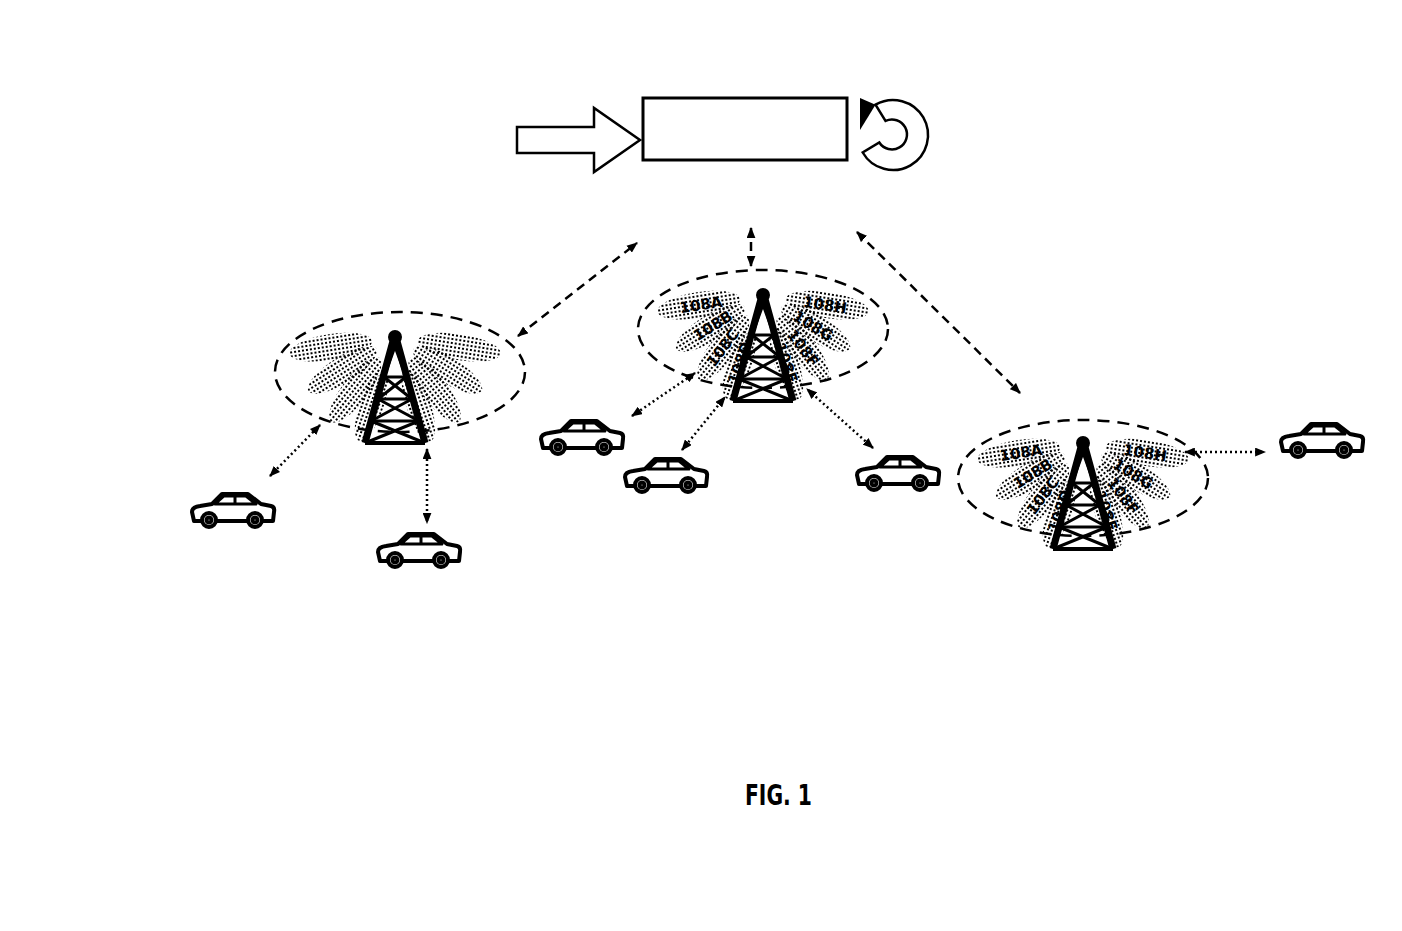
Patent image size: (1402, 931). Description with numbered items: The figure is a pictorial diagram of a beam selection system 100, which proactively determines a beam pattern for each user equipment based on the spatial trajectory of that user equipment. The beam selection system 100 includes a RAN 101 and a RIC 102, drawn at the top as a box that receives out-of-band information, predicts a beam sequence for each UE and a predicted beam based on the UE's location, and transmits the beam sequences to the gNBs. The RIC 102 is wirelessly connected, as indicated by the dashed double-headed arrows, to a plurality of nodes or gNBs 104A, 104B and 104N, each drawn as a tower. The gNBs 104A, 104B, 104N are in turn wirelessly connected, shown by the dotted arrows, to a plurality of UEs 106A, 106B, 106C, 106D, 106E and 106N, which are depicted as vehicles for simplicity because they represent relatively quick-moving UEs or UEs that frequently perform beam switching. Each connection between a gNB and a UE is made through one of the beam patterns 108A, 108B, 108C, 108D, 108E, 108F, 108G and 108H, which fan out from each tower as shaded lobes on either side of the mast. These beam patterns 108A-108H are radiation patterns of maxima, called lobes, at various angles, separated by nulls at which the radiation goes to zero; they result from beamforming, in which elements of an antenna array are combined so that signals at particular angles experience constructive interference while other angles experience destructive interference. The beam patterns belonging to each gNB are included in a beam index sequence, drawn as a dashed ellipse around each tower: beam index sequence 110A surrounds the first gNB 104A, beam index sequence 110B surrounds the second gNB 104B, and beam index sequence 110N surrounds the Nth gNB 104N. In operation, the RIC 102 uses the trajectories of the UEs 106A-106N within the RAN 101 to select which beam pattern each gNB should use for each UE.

The beam selection system 100 is at (134, 158).
The RAN 101 is at (157, 301).
The RIC 102 is at (745, 129).
The gNB 104A is at (411, 412).
The gNB 104B is at (786, 426).
The gNB 104N is at (1120, 566).
The UE 106A is at (190, 532).
The UE 106B is at (427, 571).
The UE 106C is at (591, 406).
The UE 106D is at (668, 500).
The UE 106E is at (895, 494).
The UE 106N is at (1313, 470).
The beam pattern 108A is at (330, 347).
The beam pattern 108B is at (343, 370).
The beam pattern 108C is at (355, 390).
The beam pattern 108D is at (371, 405).
The beam pattern 108E is at (418, 405).
The beam pattern 108F is at (434, 390).
The beam pattern 108G is at (448, 370).
The beam pattern 108H is at (459, 347).
The beam index sequence 110A is at (284, 348).
The beam index sequence 110B is at (641, 335).
The beam index sequence 110N is at (1127, 420).